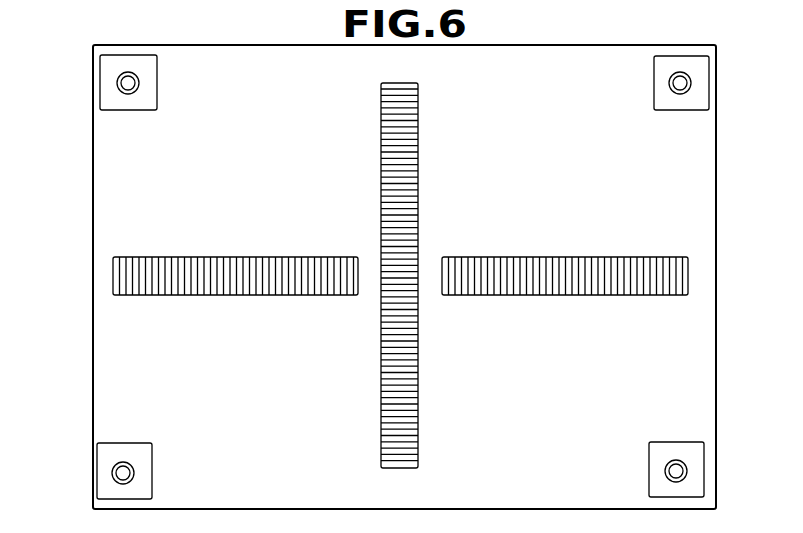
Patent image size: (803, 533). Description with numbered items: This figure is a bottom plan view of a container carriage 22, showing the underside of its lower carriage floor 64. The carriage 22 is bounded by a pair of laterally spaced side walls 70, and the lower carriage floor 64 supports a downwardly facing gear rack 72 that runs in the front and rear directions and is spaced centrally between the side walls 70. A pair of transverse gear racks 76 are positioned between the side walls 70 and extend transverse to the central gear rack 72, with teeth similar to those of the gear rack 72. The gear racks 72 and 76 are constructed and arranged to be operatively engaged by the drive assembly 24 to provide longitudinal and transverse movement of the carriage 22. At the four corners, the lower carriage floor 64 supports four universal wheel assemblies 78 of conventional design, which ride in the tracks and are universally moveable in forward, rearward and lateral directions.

The container carriage 22 is at (270, 178).
The drive assembly 24 is at (400, 275).
The lower carriage floor 64 is at (618, 181).
The side wall 70 is at (93, 201).
The gear rack 72 is at (420, 207).
The transverse gear rack 76 is at (229, 257).
The universal wheel assembly 78 is at (150, 93).